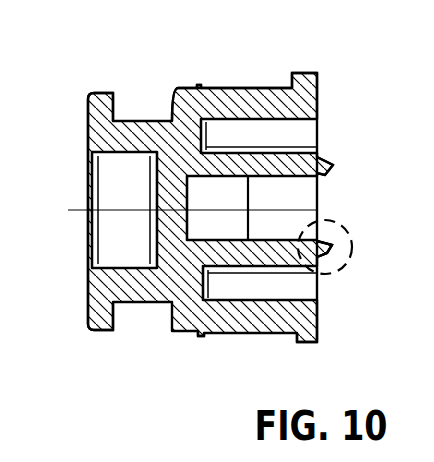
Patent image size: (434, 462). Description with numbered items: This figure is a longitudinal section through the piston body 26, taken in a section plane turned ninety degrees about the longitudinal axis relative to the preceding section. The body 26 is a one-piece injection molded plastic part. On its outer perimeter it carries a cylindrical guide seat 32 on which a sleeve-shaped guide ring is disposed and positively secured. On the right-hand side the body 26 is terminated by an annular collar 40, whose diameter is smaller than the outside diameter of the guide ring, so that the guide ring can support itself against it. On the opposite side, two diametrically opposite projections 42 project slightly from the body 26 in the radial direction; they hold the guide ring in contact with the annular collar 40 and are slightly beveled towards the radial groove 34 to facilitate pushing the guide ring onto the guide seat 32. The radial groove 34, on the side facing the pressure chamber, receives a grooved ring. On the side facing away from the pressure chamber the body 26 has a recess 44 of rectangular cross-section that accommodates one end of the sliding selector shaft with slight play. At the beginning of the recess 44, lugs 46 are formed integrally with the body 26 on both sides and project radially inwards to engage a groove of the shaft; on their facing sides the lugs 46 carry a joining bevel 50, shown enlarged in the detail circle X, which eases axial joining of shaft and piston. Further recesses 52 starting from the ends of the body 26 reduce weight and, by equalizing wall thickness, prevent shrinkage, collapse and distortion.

The body 26 is at (175, 89).
The radial groove 34 is at (125, 119).
The guide seat 32 is at (263, 88).
The annular collar 40 is at (304, 80).
The projections 42 is at (200, 86).
The recesses 52 is at (110, 249).
The lugs 46 is at (326, 168).
The joining bevel 50 is at (323, 245).
The recess 44 is at (203, 222).
The detail circle X is at (350, 247).